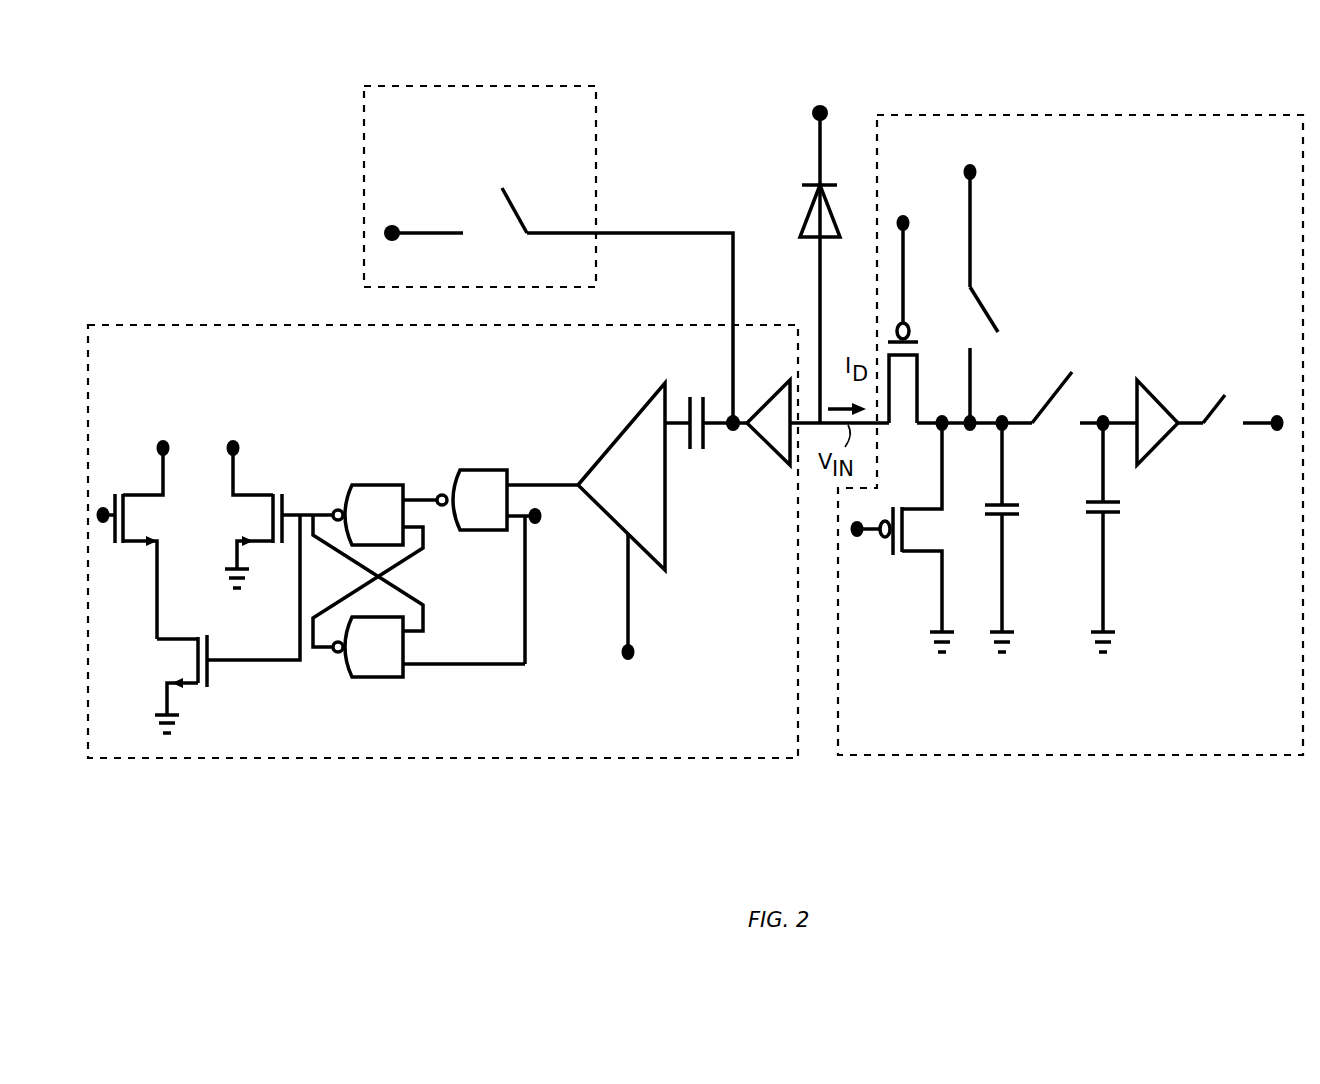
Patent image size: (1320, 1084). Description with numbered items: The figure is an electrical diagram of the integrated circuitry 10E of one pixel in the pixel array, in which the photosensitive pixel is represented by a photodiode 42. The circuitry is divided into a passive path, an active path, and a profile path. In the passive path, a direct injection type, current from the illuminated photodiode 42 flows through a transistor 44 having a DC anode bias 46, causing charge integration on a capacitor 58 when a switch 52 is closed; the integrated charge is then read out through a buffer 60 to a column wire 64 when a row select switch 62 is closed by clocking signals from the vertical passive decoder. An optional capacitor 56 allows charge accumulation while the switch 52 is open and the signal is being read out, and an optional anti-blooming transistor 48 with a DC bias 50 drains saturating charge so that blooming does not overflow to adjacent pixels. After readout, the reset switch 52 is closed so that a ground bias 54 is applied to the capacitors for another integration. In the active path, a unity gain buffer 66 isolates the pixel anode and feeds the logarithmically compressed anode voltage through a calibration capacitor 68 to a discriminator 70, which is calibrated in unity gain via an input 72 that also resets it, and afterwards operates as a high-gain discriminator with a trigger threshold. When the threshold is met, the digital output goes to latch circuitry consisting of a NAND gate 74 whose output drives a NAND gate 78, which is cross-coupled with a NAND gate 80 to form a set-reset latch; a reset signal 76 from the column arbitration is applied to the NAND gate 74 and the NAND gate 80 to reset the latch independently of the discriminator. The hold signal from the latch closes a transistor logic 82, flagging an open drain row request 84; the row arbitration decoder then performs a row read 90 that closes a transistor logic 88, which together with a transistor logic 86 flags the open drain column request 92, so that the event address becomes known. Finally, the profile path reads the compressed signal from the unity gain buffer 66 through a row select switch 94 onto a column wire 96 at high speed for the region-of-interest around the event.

The integrated circuitry 10E is at (290, 200).
The photodiode 42 is at (808, 212).
The transistor 44 is at (906, 322).
The DC anode bias 46 is at (903, 215).
The anti-blooming transistor 48 is at (915, 554).
The DC bias 50 is at (856, 536).
The switch 52 is at (983, 303).
The ground bias 54 is at (977, 172).
The optional capacitor 56 is at (1010, 516).
The capacitor 58 is at (1112, 513).
The buffer 60 is at (1161, 398).
The row select switch 62 is at (1218, 408).
The column wire 64 is at (1280, 412).
The unity gain buffer 66 is at (786, 380).
The calibration capacitor 68 is at (712, 397).
The discriminator 70 is at (622, 436).
The input 72 is at (630, 658).
The NAND gate 74 is at (478, 469).
The reset signal 76 is at (537, 523).
The NAND gate 78 is at (368, 484).
The NAND gate 80 is at (370, 678).
The transistor logic 82 is at (262, 494).
The row request 84 is at (232, 441).
The transistor logic 86 is at (185, 641).
The transistor logic 88 is at (152, 493).
The row read 90 is at (103, 522).
The column request 92 is at (161, 441).
The row select switch 94 is at (512, 200).
The column wire 96 is at (413, 232).